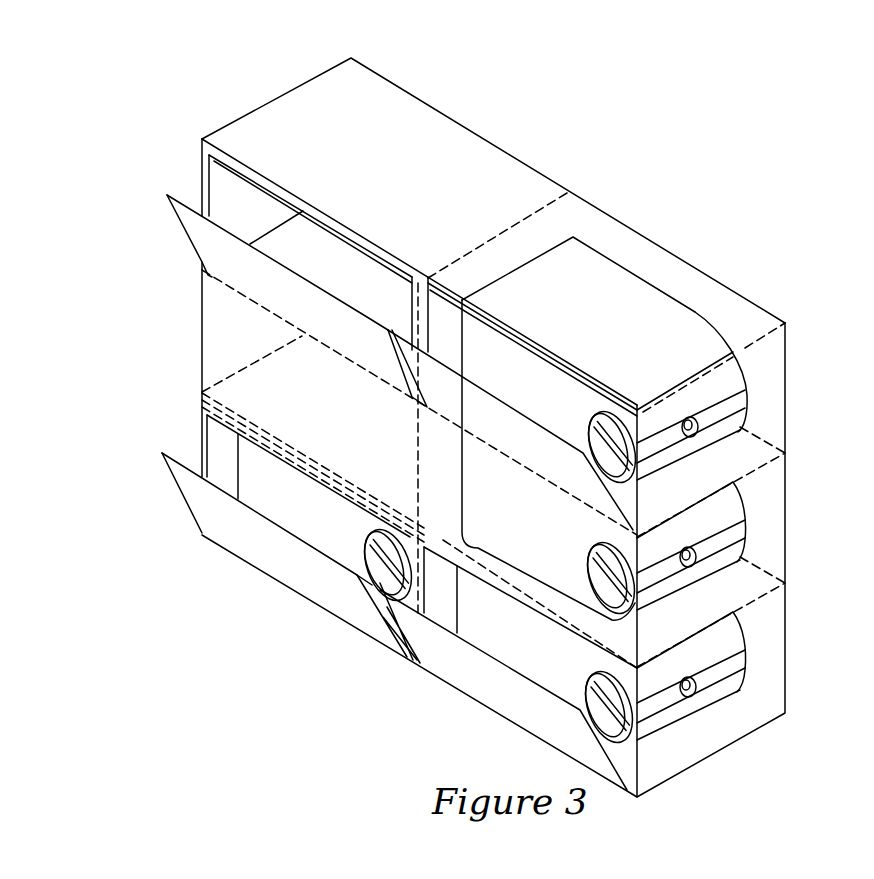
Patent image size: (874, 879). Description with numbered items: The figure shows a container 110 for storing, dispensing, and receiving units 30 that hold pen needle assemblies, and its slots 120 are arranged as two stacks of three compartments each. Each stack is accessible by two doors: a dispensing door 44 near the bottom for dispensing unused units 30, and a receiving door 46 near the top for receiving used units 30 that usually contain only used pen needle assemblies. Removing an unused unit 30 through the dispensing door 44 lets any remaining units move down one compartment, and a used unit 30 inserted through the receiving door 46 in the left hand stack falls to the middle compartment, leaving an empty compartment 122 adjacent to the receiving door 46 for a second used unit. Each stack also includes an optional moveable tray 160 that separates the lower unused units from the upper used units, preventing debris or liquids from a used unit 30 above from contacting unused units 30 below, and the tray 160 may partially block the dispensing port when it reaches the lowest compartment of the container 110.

The container 110 is at (773, 157).
The module slot 120 is at (775, 398).
The empty compartment 122 is at (222, 190).
The moveable tray 160 is at (212, 386).
The unit 30 is at (546, 396).
The dispensing door 44 is at (296, 570).
The receiving door 46 is at (300, 308).